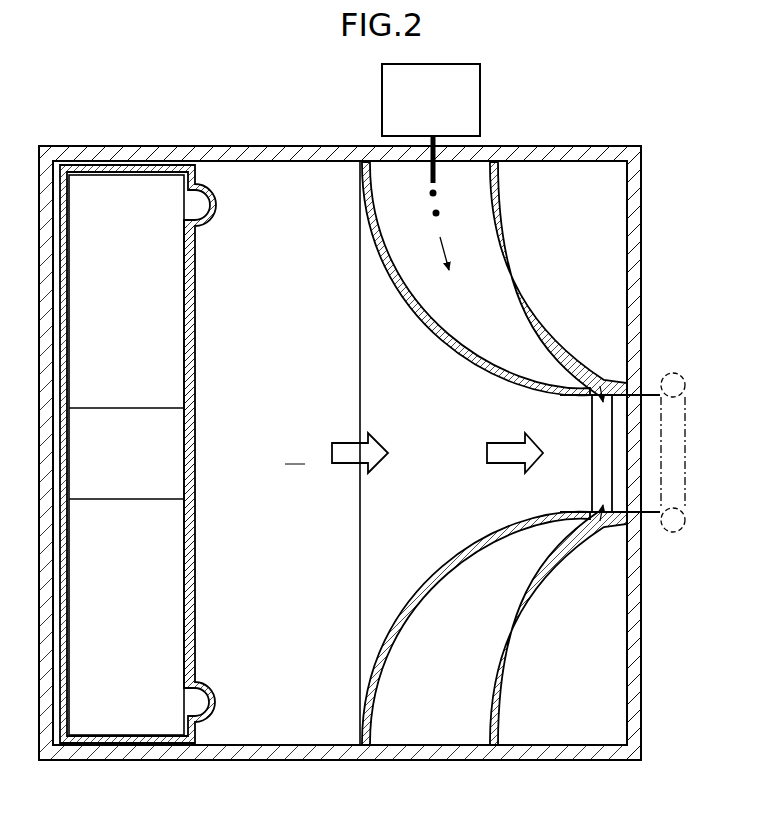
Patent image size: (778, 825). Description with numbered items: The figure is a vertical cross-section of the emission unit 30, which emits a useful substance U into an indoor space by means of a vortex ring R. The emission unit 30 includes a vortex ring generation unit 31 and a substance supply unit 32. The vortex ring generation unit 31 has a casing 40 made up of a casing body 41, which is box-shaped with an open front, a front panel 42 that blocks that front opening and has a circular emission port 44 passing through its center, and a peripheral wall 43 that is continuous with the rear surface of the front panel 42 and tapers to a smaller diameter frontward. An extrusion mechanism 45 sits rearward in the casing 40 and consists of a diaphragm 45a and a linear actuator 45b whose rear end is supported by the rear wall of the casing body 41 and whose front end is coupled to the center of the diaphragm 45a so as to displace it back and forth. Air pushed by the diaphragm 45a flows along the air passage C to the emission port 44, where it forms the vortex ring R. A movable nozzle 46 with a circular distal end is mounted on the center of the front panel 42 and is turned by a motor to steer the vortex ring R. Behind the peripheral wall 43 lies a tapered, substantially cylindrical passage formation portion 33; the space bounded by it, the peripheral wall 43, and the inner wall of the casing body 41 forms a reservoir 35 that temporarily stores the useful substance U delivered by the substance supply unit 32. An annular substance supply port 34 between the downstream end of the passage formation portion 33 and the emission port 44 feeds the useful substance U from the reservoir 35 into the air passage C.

The emission unit 30 is at (367, 403).
The vortex ring generation unit 31 is at (150, 144).
The substance supply unit 32 is at (481, 98).
The passage formation portion 33 is at (455, 346).
The substance supply port 34 is at (596, 398).
The reservoir 35 is at (396, 250).
The casing 40 is at (270, 144).
The casing body 41 is at (561, 146).
The front panel 42 is at (641, 243).
The peripheral wall 43 is at (528, 303).
The emission port 44 is at (650, 477).
The extrusion mechanism 45 is at (188, 455).
The diaphragm 45a is at (197, 381).
The linear actuator 45b is at (156, 389).
The movable nozzle 46 is at (652, 522).
The useful substance U is at (428, 193).
The air passage C is at (336, 453).
The vortex ring R is at (688, 381).